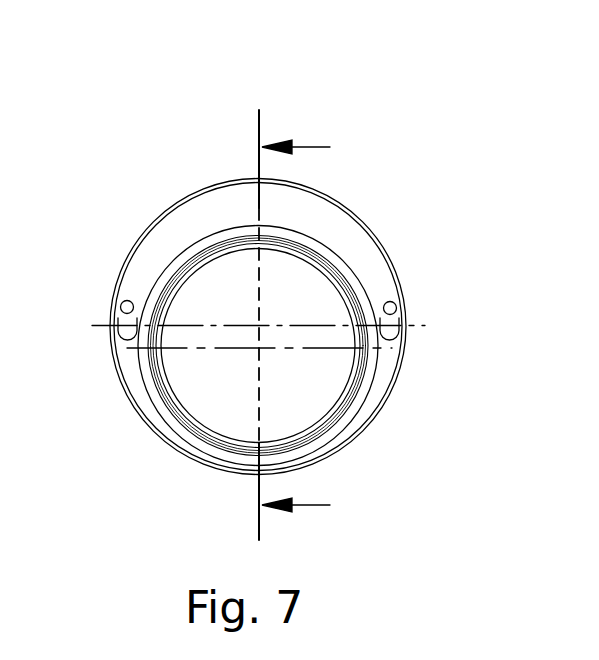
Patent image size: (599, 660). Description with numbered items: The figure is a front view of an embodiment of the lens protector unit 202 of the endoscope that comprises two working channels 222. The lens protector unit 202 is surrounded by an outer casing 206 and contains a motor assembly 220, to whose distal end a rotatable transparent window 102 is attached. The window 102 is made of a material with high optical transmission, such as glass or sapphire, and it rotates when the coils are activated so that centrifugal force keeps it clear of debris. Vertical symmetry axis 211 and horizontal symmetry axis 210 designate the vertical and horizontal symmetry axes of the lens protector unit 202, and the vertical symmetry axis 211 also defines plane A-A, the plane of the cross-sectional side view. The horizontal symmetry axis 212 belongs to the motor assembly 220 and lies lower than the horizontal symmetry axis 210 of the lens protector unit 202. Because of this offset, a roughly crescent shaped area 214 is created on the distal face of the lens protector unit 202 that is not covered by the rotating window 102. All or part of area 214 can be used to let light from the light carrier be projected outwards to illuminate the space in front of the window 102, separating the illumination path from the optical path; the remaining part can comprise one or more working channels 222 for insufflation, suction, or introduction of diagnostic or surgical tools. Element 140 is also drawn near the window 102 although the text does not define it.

The lens protector unit 202 is at (293, 102).
The vertical symmetry axis 211 is at (258, 135).
The crescent shaped area 214 is at (168, 225).
The working channels 222 is at (121, 303).
The outer casing 206 is at (142, 417).
The motor assembly 220 is at (189, 481).
The seal ring 140 is at (345, 277).
The horizontal symmetry axis 210 is at (422, 327).
The horizontal symmetry axis of motor assembly 212 is at (383, 347).
The rotatable transparent window 102 is at (303, 415).